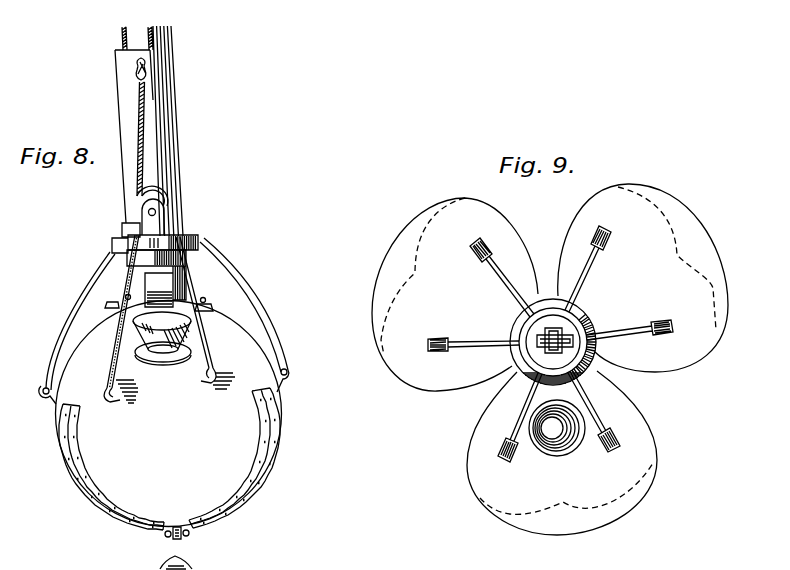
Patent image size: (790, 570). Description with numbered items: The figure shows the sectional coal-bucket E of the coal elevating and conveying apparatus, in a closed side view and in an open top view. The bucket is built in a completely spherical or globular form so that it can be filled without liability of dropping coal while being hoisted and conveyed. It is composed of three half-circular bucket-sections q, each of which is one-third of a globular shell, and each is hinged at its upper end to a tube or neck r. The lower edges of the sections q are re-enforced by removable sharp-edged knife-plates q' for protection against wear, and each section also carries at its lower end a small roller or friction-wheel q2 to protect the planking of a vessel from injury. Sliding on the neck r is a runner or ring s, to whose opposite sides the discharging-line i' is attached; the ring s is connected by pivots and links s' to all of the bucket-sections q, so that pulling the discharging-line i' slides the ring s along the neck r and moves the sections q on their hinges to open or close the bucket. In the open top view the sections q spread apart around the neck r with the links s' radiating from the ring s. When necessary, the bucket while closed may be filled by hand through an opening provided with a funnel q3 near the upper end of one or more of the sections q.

In FIG. 8, the discharging-line i' is at (152, 131).
In FIG. 8, the tube or neck r is at (200, 274).
In FIG. 9, the tube or neck r is at (548, 322).
In FIG. 8, the runner or ring s is at (159, 235).
In FIG. 9, the runner or ring s is at (558, 359).
In FIG. 8, the pivots and links s' is at (164, 319).
In FIG. 9, the pivots and links s' is at (550, 344).
In FIG. 8, the bucket-sections q is at (169, 414).
In FIG. 9, the bucket-sections q is at (550, 359).
In FIG. 8, the knife-plates q' is at (181, 459).
In FIG. 8, the roller or friction-wheel q2 is at (176, 540).
In FIG. 8, the funnel q3 is at (162, 338).
In FIG. 9, the funnel q3 is at (557, 428).
In FIG. 8, the apparatus E is at (282, 418).
In FIG. 9, the apparatus E is at (537, 235).